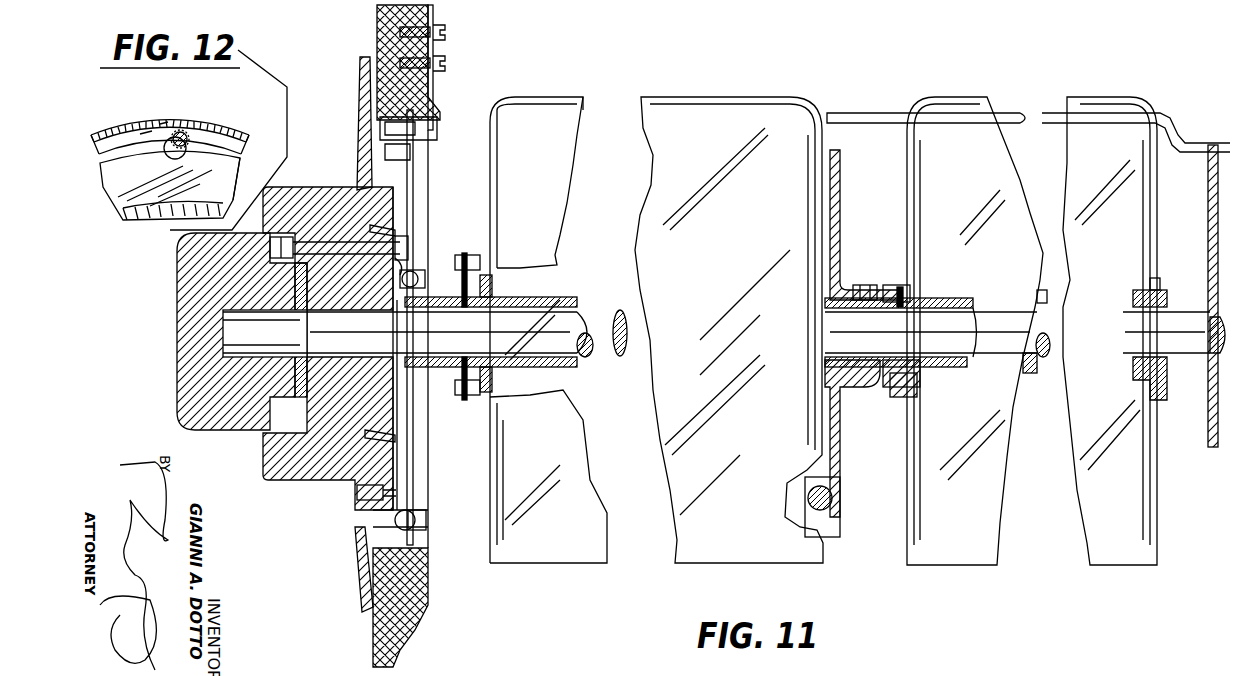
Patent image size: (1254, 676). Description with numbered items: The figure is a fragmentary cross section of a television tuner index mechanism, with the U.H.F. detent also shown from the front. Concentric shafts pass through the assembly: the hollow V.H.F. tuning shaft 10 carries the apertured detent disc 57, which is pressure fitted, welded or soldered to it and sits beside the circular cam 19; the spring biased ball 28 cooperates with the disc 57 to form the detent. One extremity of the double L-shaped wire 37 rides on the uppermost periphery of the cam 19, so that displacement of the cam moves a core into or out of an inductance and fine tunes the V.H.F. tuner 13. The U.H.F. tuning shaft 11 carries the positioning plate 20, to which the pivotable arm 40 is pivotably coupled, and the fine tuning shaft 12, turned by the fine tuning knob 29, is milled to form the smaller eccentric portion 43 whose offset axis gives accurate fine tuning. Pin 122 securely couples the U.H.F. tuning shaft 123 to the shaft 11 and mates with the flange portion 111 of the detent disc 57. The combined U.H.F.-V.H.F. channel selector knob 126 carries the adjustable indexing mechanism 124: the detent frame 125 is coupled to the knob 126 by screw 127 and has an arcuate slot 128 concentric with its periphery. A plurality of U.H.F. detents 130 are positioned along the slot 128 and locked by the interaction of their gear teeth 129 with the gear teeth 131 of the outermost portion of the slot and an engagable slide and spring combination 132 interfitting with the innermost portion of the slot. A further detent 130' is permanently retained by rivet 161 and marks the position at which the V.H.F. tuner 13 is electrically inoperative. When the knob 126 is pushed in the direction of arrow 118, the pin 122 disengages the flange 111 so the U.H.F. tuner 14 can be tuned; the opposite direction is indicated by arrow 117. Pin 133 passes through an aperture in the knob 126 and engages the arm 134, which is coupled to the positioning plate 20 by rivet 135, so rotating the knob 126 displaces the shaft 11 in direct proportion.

In FIG. 11, the hollow shaft 10 is at (560, 300).
In FIG. 11, the U.H.F. tuning shaft 11 is at (570, 360).
In FIG. 11, the fine tuning shaft 12 is at (572, 332).
In FIG. 11, the V.H.F. tuner 13 is at (663, 188).
In FIG. 11, the U.H.F. tuner 14 is at (1085, 188).
In FIG. 11, the cam 19 is at (1213, 175).
In FIG. 11, the positioning plate 20 is at (420, 295).
In FIG. 11, the spring biased ball 28 is at (832, 495).
In FIG. 11, the fine tuning knob 29 is at (185, 350).
In FIG. 11, the double L-shaped wire 37 is at (1165, 117).
In FIG. 11, the pivotable arm 40 is at (300, 300).
In FIG. 11, the milled portion of shaft 43 is at (300, 341).
In FIG. 11, the apertured detent disc 57 is at (840, 181).
In FIG. 11, the flange portion 111 is at (865, 285).
In FIG. 11, the direction arrow 117 is at (98, 363).
In FIG. 11, the arrow 118 is at (160, 383).
In FIG. 11, the pin 122 is at (890, 285).
In FIG. 11, the U.H.F. tuning shaft 123 is at (1042, 290).
In FIG. 12, the adjustable indexing mechanism 124 is at (162, 112).
In FIG. 12, the detent frame 125 is at (247, 117).
In FIG. 11, the detent frame 125 is at (420, 180).
In FIG. 11, the combined U.H.F.-V.H.F. channel selector knob 126 is at (265, 463).
In FIG. 11, the screw 127 is at (400, 437).
In FIG. 12, the arcuate slot 128 is at (233, 151).
In FIG. 12, the gear teeth 129 is at (152, 133).
In FIG. 12, the U.H.F. detent 130 is at (185, 120).
In FIG. 11, the detent 130' is at (437, 522).
In FIG. 12, the gear teeth 131 is at (213, 130).
In FIG. 12, the engagable slide and spring combination 132 is at (187, 153).
In FIG. 11, the engagable slide and spring combination 132 is at (373, 118).
In FIG. 11, the pin 133 is at (272, 236).
In FIG. 11, the arm 134 is at (410, 250).
In FIG. 11, the rivet 135 is at (420, 275).
In FIG. 11, the rivet 161 is at (375, 518).